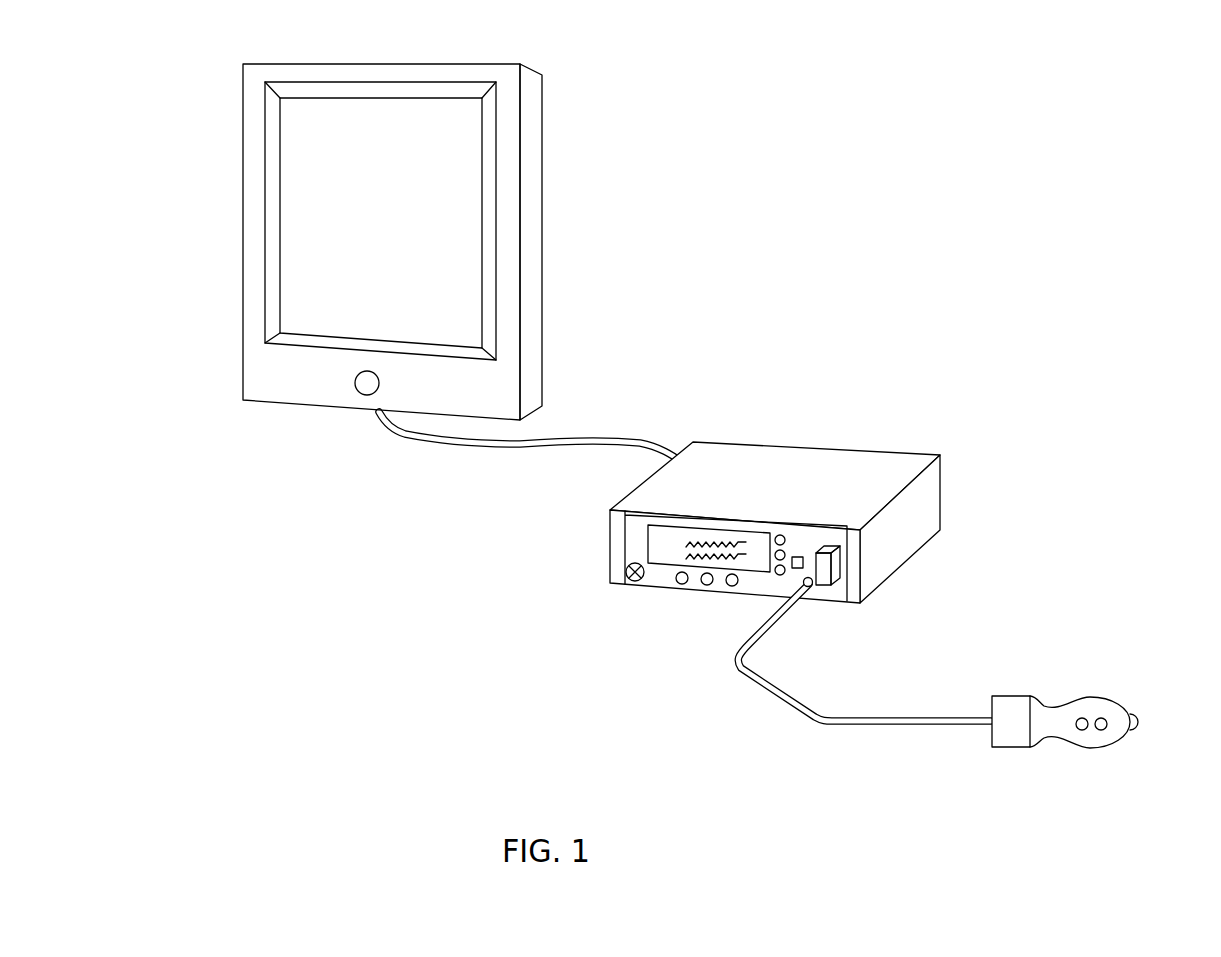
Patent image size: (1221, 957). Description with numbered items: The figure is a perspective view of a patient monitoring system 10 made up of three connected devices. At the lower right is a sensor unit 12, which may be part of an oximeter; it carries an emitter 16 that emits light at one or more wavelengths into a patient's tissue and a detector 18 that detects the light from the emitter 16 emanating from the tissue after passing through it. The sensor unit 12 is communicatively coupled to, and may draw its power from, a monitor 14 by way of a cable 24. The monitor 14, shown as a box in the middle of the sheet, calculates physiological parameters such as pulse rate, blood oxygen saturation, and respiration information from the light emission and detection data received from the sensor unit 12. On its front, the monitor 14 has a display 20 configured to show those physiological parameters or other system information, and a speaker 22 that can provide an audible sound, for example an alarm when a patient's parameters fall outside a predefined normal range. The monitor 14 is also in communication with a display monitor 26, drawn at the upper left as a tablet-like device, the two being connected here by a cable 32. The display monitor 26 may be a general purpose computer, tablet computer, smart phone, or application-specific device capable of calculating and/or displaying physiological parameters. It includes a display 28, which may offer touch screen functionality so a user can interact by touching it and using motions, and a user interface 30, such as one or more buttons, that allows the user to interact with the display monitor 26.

The patient monitoring system 10 is at (790, 221).
The sensor unit 12 is at (1152, 693).
The monitor 14 is at (842, 448).
The emitter 16 is at (1083, 733).
The detector 18 is at (1104, 732).
The display 20 is at (668, 565).
The speaker 22 is at (630, 581).
The cable 24 is at (757, 693).
The display monitor 26 is at (531, 171).
The display 28 is at (280, 291).
The user interface 30 is at (360, 393).
The cable 32 is at (580, 433).